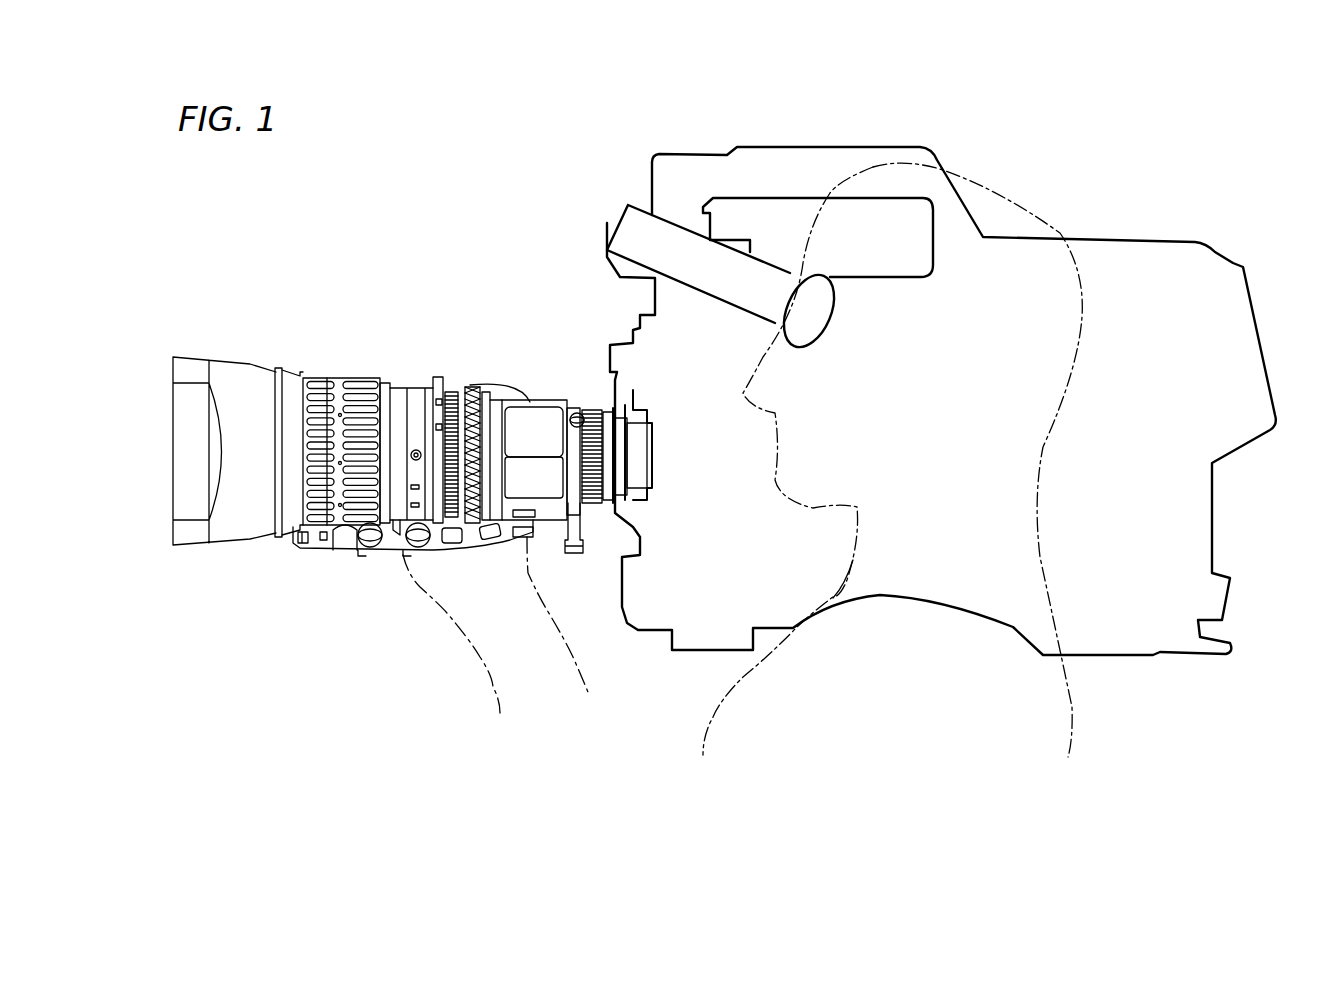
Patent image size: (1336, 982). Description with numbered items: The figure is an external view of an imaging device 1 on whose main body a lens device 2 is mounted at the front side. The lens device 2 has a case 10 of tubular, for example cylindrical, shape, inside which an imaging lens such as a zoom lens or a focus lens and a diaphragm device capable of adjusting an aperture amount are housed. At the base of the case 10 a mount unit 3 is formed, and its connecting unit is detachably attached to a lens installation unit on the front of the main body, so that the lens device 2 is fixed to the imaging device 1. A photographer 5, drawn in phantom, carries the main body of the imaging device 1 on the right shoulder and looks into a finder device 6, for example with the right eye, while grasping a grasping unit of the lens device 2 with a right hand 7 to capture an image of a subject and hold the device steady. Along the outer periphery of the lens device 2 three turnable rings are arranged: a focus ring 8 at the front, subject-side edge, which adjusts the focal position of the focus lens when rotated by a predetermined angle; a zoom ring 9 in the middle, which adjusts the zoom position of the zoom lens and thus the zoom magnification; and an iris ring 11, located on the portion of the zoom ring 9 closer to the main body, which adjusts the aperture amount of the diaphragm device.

The imaging device 1 is at (1174, 239).
The lens device 2 is at (383, 383).
The mount unit 3 is at (593, 507).
The photographer 5 is at (1055, 727).
The finder device 6 is at (687, 243).
The right hand 7 is at (508, 690).
The focus ring 8 is at (323, 537).
The zoom ring 9 is at (448, 385).
The case 10 is at (397, 513).
The iris ring 11 is at (467, 387).